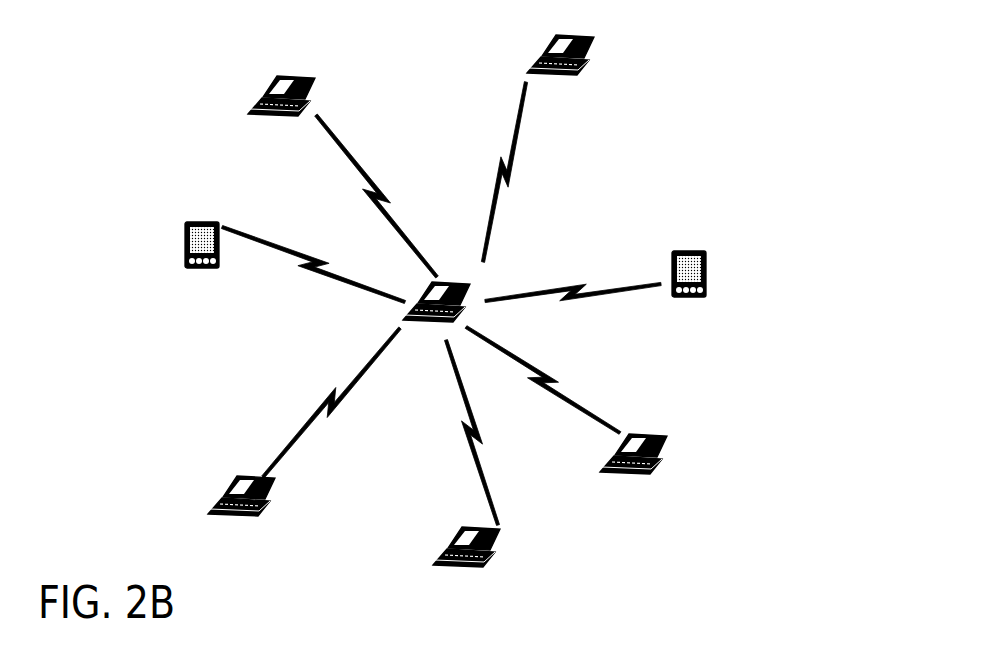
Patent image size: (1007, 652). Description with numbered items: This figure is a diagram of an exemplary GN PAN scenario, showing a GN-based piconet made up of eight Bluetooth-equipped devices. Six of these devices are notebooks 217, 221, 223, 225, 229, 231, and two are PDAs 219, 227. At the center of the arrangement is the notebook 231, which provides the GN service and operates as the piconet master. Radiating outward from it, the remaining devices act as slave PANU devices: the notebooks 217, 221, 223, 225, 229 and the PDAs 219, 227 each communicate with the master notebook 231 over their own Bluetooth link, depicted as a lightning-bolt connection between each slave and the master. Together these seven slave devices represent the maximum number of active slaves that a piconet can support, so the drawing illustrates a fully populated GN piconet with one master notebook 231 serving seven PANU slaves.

The notebook 217 is at (598, 40).
The PDA 219 is at (705, 256).
The notebook 221 is at (668, 437).
The notebook 223 is at (503, 531).
The notebook 225 is at (280, 482).
The PDA 227 is at (190, 222).
The notebook 229 is at (322, 76).
The notebook 231 is at (470, 281).